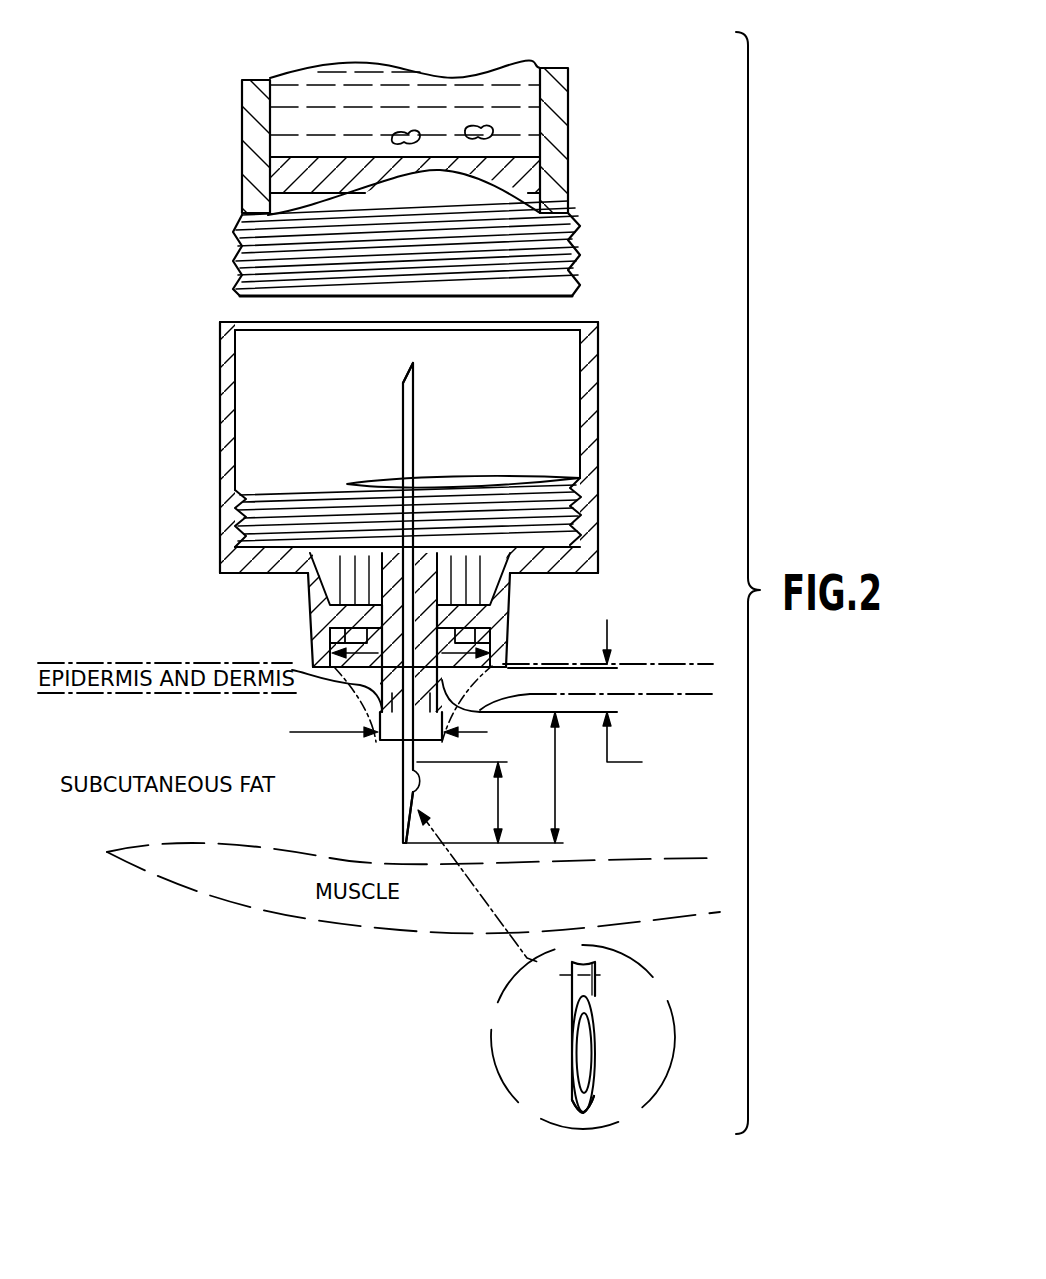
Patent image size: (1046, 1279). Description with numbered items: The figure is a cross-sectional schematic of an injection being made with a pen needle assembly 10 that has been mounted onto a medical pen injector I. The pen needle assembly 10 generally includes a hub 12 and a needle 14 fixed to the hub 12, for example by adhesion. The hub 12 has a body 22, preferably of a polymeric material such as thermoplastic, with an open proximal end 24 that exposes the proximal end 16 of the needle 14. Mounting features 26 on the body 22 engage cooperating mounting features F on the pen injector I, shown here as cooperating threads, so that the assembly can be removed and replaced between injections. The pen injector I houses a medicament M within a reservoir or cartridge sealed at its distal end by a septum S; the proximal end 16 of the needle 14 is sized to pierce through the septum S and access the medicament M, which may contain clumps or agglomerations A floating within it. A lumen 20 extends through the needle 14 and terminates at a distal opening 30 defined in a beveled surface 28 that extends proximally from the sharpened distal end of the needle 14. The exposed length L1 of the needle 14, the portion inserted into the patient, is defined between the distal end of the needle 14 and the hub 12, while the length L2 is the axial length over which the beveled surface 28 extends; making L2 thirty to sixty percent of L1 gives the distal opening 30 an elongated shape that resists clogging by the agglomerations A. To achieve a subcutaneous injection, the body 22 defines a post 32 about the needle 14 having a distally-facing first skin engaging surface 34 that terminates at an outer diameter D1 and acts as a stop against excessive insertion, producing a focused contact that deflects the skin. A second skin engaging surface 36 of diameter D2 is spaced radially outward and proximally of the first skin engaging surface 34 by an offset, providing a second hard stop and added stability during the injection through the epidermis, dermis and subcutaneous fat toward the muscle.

The pen needle assembly 10 is at (612, 408).
The hub 12 is at (598, 496).
The needle 14 is at (403, 408).
The proximal end 16 is at (411, 363).
The lumen 20 is at (612, 970).
The body 22 is at (568, 576).
The open proximal end 24 is at (582, 322).
The mounting features 26 is at (470, 474).
The beveled surface 28 is at (412, 790).
The distal opening 30 is at (585, 1056).
The post 32 is at (375, 678).
The first skin engaging surface 34 is at (392, 714).
The second skin engaging surface 36 is at (330, 667).
The pen injector I is at (603, 128).
The medicament M is at (314, 80).
The agglomerations A is at (404, 132).
The septum S is at (270, 173).
The mounting features F is at (236, 254).
The outer diameter D1 is at (388, 721).
The diameter D2 is at (470, 640).
The exposed length L1 is at (555, 782).
The length L2 is at (498, 797).